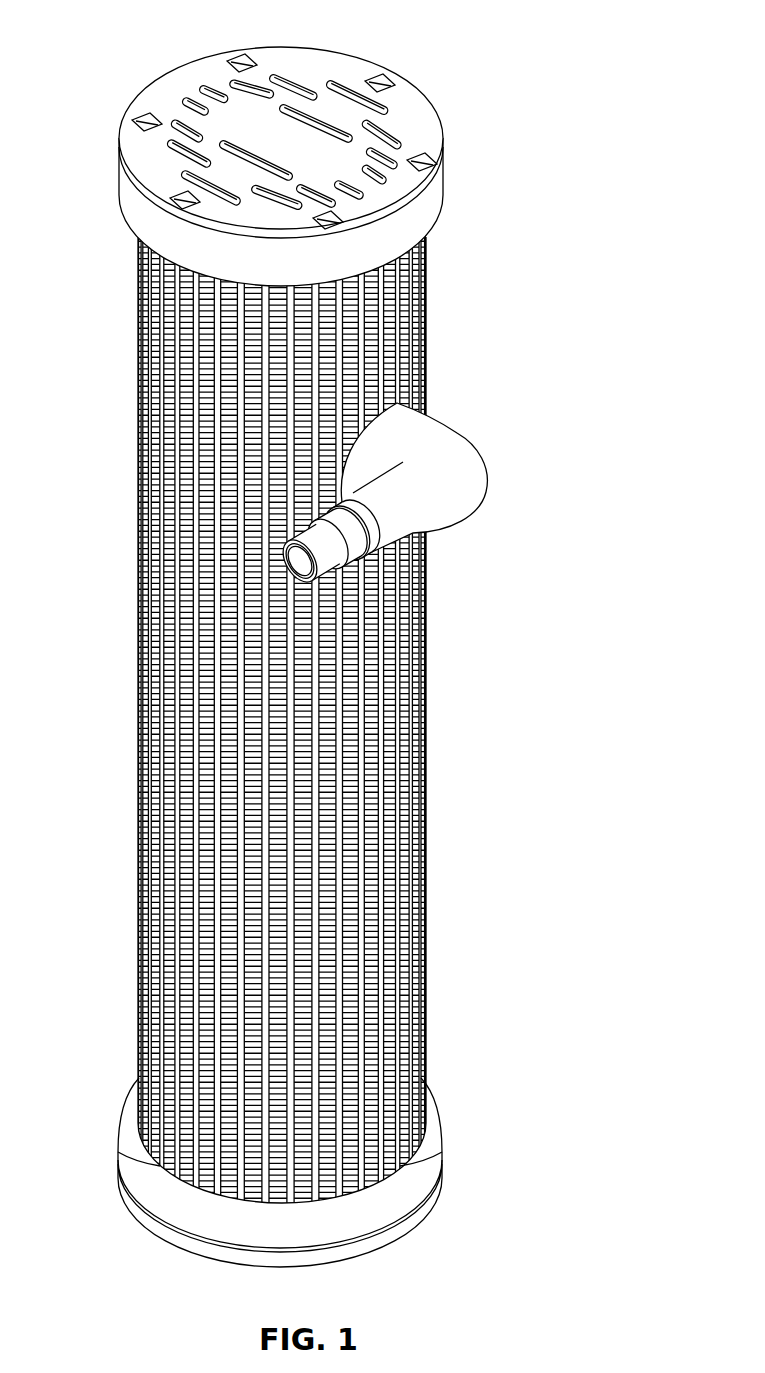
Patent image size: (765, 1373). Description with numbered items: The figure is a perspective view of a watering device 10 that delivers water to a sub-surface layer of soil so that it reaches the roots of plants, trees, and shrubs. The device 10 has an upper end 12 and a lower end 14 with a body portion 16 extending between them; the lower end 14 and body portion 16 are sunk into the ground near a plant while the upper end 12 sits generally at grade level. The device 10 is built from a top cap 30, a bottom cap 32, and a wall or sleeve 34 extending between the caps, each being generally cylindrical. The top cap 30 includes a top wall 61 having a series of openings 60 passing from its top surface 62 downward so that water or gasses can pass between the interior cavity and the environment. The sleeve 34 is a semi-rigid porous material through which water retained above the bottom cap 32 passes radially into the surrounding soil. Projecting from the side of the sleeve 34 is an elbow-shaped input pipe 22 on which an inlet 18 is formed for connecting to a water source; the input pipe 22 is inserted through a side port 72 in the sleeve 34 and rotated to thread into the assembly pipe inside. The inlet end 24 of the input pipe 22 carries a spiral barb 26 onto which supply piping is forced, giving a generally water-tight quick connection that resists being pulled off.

The watering device 10 is at (333, 637).
The upper end 12 is at (337, 147).
The lower end 14 is at (331, 1172).
The body portion 16 is at (334, 702).
The inlet 18 is at (296, 561).
The input pipe 22 is at (327, 503).
The inlet end 24 is at (392, 523).
The spiral barb 26 is at (403, 558).
The top cap 30 is at (313, 118).
The bottom cap 32 is at (430, 1210).
The sleeve 34 is at (428, 950).
The openings 60 is at (300, 83).
The top wall 61 is at (414, 110).
The top surface 62 is at (413, 180).
The side port 72 is at (380, 408).